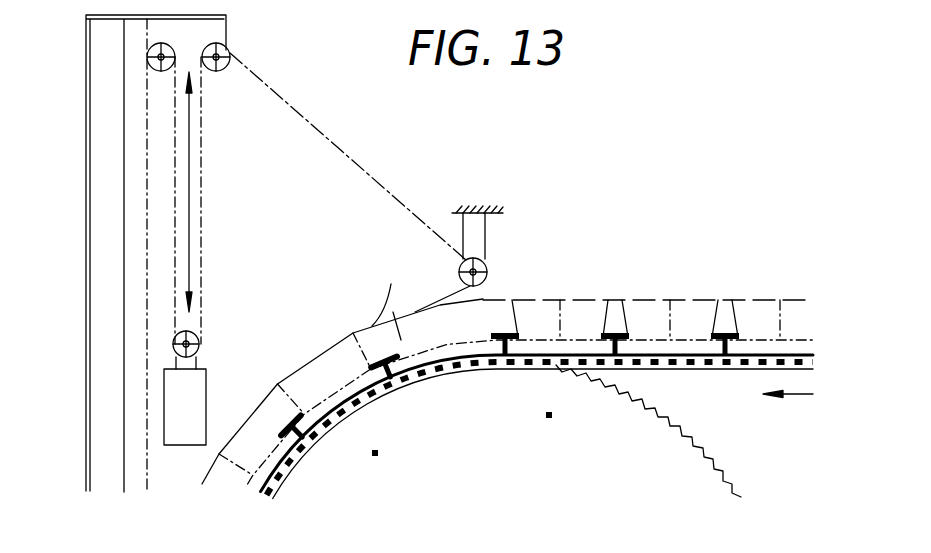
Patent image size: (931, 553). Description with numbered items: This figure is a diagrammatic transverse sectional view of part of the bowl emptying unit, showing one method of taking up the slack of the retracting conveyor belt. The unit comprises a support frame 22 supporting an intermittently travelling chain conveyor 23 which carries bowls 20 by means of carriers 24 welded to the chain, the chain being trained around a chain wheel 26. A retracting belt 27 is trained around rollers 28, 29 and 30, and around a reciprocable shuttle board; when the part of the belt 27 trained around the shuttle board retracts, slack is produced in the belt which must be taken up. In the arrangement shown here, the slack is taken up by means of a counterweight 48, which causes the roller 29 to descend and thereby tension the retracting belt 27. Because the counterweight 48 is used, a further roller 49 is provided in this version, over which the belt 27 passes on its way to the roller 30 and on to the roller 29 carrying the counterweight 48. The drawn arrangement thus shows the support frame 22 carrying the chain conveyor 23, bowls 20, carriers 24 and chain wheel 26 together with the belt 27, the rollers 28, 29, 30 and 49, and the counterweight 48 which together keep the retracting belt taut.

The bowls 20 is at (581, 302).
The support frame 22 is at (107, 315).
The chain conveyor 23 is at (523, 368).
The carriers 24 is at (398, 382).
The chain wheel 26 is at (660, 458).
The retracting belt 27 is at (400, 198).
The roller 28 is at (489, 266).
The roller 29 is at (199, 349).
The roller 30 is at (226, 53).
The counterweight 48 is at (190, 388).
The further roller 49 is at (148, 60).